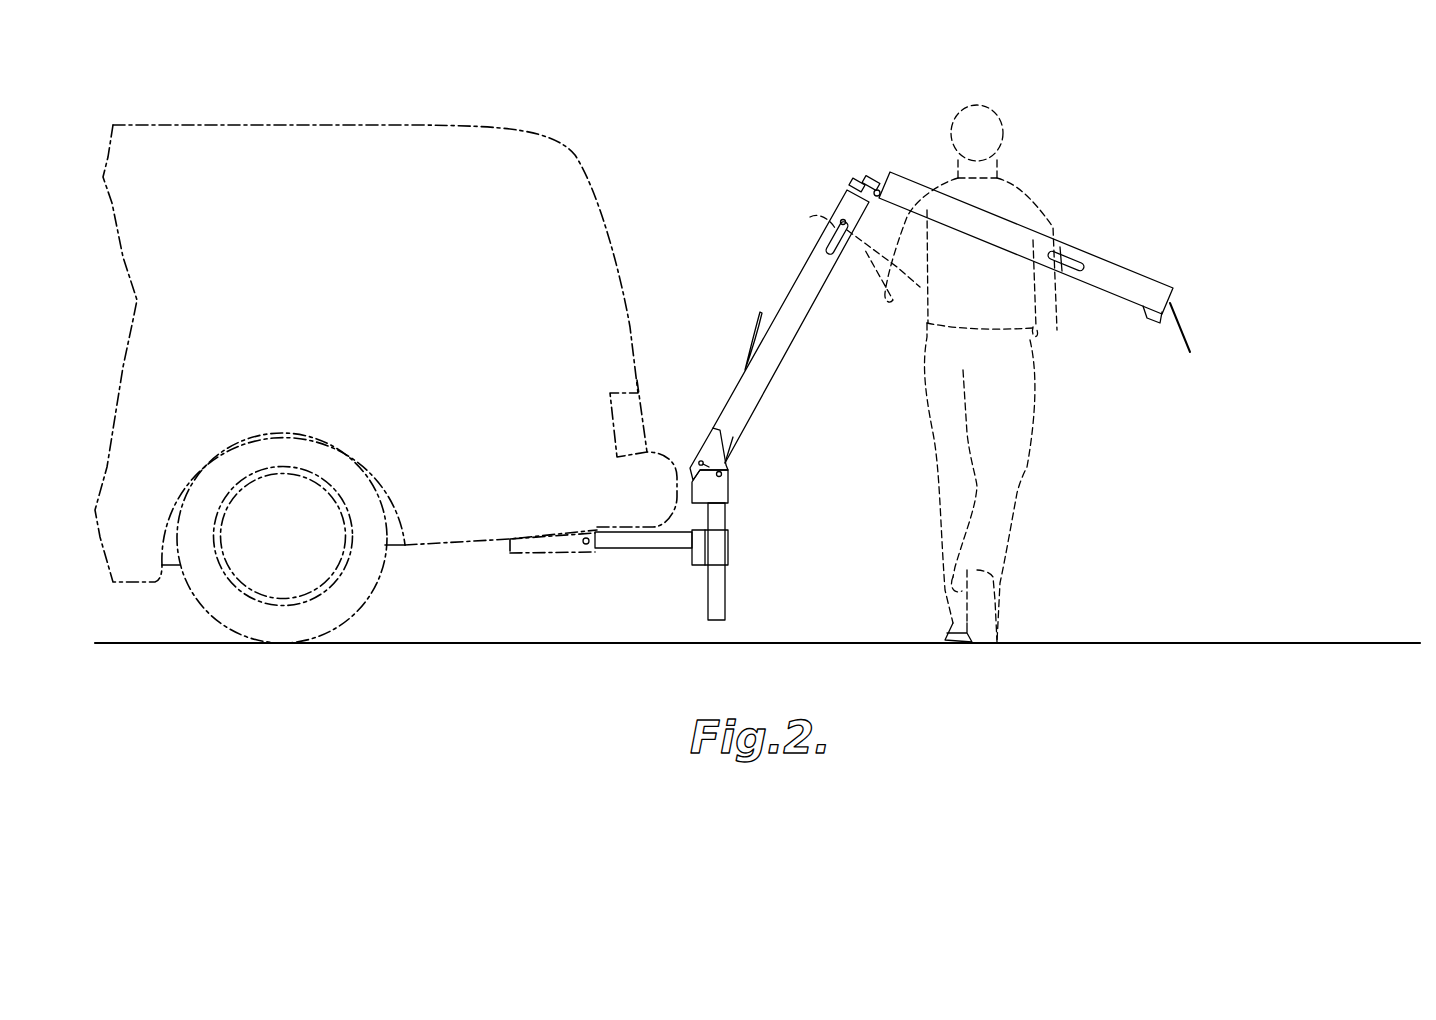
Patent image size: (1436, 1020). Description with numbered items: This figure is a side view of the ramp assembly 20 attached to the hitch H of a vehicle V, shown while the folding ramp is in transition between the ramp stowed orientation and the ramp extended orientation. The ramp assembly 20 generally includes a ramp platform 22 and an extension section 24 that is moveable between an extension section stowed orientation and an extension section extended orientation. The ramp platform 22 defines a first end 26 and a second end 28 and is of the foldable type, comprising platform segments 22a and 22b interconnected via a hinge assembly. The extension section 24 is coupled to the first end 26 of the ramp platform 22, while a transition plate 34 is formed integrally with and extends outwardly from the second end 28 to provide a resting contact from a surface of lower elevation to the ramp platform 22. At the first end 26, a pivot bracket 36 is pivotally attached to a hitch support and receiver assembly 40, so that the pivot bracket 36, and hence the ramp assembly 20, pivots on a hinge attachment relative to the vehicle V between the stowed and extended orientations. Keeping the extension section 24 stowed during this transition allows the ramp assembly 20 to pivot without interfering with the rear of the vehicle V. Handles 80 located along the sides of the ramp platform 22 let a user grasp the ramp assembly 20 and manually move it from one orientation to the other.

The vehicle V is at (573, 153).
The hitch H is at (653, 548).
The ramp assembly 20 is at (1063, 112).
The ramp platform 22 is at (984, 317).
The platform segment 22a is at (790, 293).
The platform segment 22b is at (1130, 267).
The extension section 24 is at (758, 315).
The first end 26 is at (733, 437).
The second end 28 is at (1173, 288).
The transition plate 34 is at (1180, 312).
The pivot bracket 36 is at (710, 437).
The hitch support and receiver assembly 40 is at (730, 489).
The handles 80 is at (835, 228).